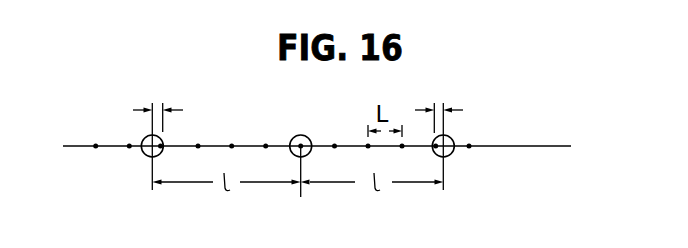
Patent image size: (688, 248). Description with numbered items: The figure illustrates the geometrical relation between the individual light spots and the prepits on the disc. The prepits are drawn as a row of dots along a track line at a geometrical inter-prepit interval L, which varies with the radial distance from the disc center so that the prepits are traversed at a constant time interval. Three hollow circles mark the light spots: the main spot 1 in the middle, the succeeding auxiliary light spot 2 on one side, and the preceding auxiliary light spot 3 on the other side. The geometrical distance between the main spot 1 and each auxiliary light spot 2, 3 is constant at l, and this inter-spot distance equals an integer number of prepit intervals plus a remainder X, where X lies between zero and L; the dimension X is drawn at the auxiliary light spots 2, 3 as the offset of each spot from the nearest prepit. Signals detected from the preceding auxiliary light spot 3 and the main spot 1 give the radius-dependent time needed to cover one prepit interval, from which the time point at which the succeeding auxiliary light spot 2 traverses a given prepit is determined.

The main spot 1 is at (301, 137).
The succeeding auxiliary light spot 2 is at (161, 144).
The preceding auxiliary light spot 3 is at (450, 153).